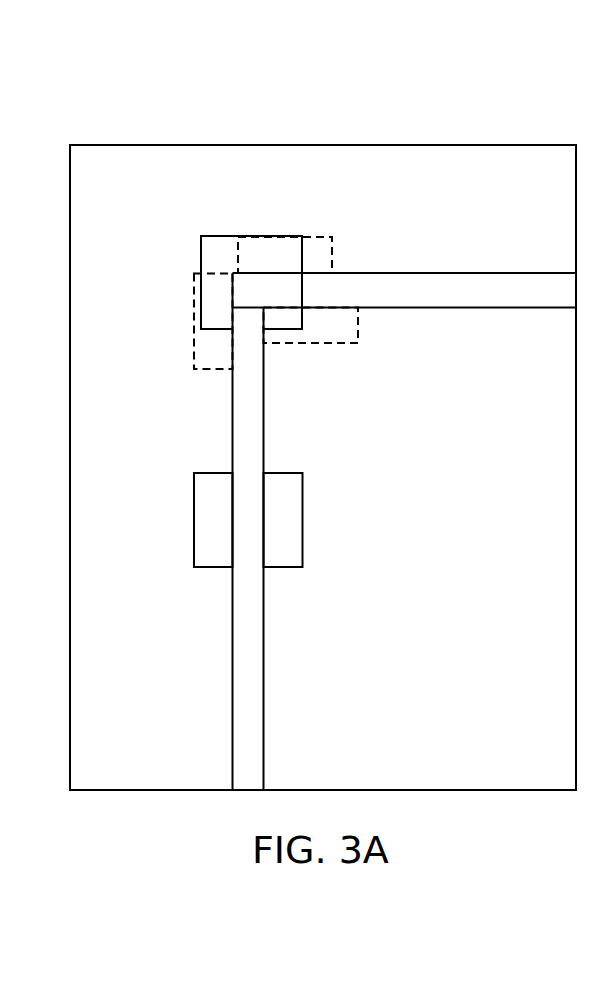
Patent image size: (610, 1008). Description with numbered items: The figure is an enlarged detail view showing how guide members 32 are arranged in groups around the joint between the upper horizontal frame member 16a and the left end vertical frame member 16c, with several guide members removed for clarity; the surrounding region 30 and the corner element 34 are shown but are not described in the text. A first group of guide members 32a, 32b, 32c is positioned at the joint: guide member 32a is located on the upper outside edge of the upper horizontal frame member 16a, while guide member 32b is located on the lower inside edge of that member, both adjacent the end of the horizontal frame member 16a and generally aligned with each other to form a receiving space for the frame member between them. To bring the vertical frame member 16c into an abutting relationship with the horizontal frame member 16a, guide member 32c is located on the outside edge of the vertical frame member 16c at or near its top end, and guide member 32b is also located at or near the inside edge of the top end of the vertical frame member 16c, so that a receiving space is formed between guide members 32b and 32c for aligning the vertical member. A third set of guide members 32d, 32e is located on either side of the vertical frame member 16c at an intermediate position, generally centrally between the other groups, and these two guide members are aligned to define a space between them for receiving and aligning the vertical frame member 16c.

The substrate / display region 30 is at (505, 190).
The upper horizontal frame member 16a is at (535, 248).
The left end vertical frame member 16c is at (254, 678).
The connection portion 34 is at (219, 248).
The guide member 32a is at (333, 266).
The guide member 32b is at (350, 334).
The guide member 32c is at (197, 340).
The guide member 32d is at (203, 513).
The guide member 32e is at (293, 513).
The guide members 32 is at (212, 548).